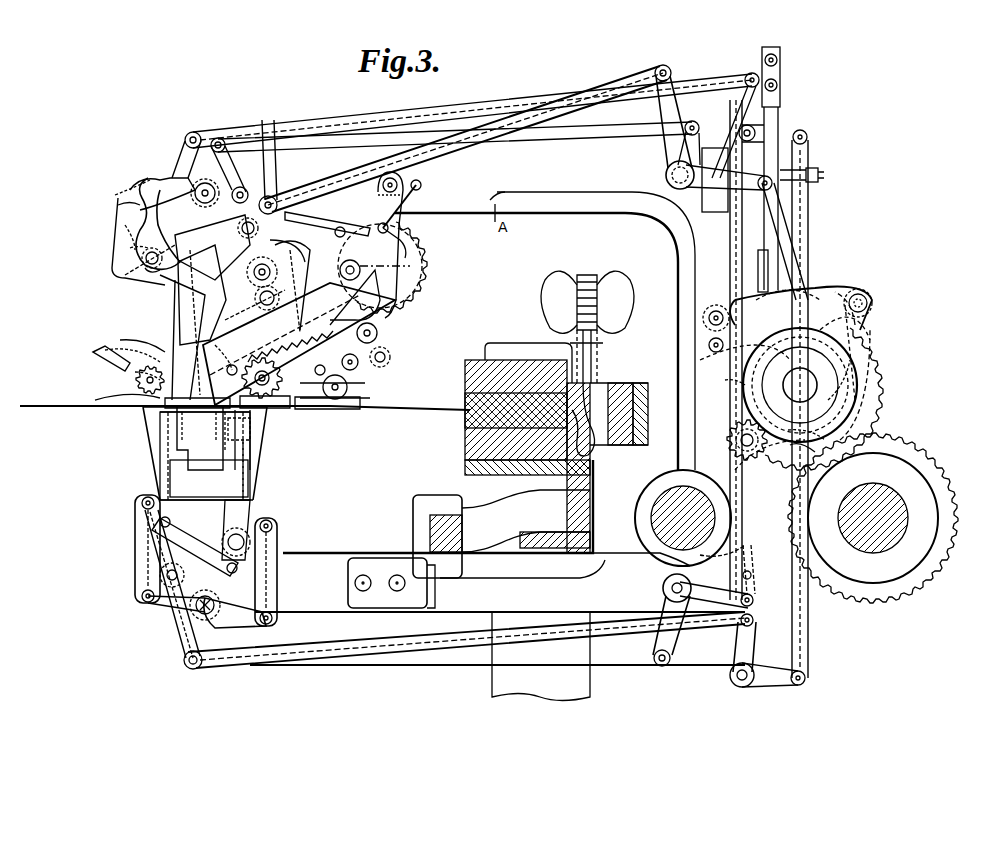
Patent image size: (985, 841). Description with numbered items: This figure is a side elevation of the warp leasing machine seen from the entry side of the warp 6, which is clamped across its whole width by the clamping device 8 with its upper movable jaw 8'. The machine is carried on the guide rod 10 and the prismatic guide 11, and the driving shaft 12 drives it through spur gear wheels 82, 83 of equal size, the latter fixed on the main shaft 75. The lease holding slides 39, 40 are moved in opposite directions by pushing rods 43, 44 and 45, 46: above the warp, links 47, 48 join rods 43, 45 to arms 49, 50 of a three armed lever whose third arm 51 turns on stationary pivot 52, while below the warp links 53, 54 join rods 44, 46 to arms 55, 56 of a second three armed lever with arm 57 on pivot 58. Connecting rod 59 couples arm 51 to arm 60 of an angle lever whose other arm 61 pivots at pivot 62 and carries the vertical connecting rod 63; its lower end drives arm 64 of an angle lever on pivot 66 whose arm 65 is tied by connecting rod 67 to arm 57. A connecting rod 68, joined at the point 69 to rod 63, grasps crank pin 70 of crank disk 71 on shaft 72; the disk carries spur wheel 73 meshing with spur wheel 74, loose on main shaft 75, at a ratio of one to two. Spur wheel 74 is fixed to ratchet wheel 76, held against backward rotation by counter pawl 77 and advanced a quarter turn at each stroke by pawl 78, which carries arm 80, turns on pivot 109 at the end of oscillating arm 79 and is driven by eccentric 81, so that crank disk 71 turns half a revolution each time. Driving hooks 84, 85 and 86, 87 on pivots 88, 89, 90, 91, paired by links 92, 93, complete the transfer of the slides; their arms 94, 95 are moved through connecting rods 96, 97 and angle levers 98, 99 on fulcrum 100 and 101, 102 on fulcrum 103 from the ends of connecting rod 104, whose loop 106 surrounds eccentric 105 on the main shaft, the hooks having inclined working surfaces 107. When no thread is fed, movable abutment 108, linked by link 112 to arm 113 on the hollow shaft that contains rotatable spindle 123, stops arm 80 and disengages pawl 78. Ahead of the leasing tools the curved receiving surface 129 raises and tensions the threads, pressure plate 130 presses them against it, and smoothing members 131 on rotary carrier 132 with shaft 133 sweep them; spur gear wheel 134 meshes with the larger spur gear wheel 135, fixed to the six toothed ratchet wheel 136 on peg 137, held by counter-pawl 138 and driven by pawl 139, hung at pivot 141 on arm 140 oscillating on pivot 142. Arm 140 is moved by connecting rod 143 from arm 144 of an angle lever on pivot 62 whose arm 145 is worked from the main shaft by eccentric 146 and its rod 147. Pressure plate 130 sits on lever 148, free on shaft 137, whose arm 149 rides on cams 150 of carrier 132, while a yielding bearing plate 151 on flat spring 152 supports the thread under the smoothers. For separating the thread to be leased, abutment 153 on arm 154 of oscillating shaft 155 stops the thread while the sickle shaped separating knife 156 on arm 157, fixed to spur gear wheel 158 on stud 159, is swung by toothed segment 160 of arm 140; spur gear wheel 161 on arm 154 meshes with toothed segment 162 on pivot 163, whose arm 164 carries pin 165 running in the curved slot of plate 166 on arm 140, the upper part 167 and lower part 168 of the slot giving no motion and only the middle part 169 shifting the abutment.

The warp 6 is at (30, 402).
The clamping device 8 is at (542, 456).
The upper movable jaw 8' is at (536, 351).
The guide rod 10 is at (650, 500).
The prismatic guide 11 is at (440, 533).
The driving shaft 12 is at (862, 565).
The slide 39 is at (138, 388).
The slide 40 is at (240, 422).
The pushing rod 43 is at (170, 318).
The pushing rod 44 is at (168, 458).
The pushing rod 45 is at (258, 400).
The pushing rod 46 is at (240, 456).
The link 47 is at (140, 183).
The link 48 is at (300, 214).
The arm of three armed lever 49 is at (158, 172).
The arm of three armed lever 50 is at (242, 188).
The arm of three armed lever 51 is at (197, 130).
The stationary pivot 52 is at (222, 136).
The link 53 is at (136, 583).
The link 54 is at (278, 598).
The arm of three armed lever 55 is at (150, 605).
The arm of three armed lever 56 is at (225, 620).
The arm of three armed lever 57 is at (184, 660).
The stationary pivot 58 is at (212, 600).
The connecting rod 59 is at (302, 128).
The arm of angle lever 60 is at (700, 150).
The arm of angle lever 61 is at (722, 195).
The stationary pivot 62 is at (666, 175).
The vertical connecting rod 63 is at (742, 240).
The arm of angle lever 64 is at (754, 602).
The arm of angle lever 65 is at (672, 648).
The stationary pivot 66 is at (663, 586).
The connecting rod 67 is at (426, 662).
The connecting rod 68 is at (748, 548).
The connection point 69 is at (752, 588).
The crank pin 70 is at (742, 470).
The crank disk 71 is at (740, 448).
The shaft 72 is at (727, 440).
The spur wheel 73 is at (732, 380).
The spur wheel 74 is at (745, 392).
The main shaft 75 is at (820, 385).
The ratchet wheel 76 is at (832, 392).
The counter pawl 77 is at (708, 347).
The actuating pawl 78 is at (870, 322).
The oscillating arm 79 is at (868, 300).
The arm of pawl 80 is at (855, 288).
The eccentric 81 is at (850, 445).
The spur gear wheel 82 is at (895, 462).
The spur gear wheel 83 is at (880, 352).
The driving hook 84 is at (150, 342).
The driving hook 85 is at (145, 437).
The driving hook 86 is at (270, 328).
The driving hook 87 is at (262, 445).
The stationary pivot 88 is at (142, 260).
The stationary pivot 89 is at (285, 253).
The stationary pivot 90 is at (166, 574).
The stationary pivot 91 is at (250, 537).
The link 92 is at (215, 300).
The link 93 is at (195, 542).
The arm of driving hook 94 is at (185, 160).
The arm of driving hook 95 is at (178, 640).
The connecting rod 96 is at (335, 132).
The connecting rod 97 is at (392, 660).
The arm of angle lever 98 is at (782, 106).
The arm of angle lever 99 is at (790, 135).
The fulcrum 100 is at (752, 132).
The arm of angle lever 101 is at (750, 632).
The arm of angle lever 102 is at (778, 685).
The fulcrum 103 is at (742, 688).
The connecting rod 104 is at (806, 158).
The eccentric 105 is at (868, 342).
The loop 106 is at (860, 396).
The inclined working surfaces 107 is at (150, 424).
The movable abutment 108 is at (768, 270).
The pivot 109 is at (872, 305).
The link 112 is at (780, 78).
The arm 113 is at (785, 88).
The rotatable spindle 123 is at (818, 176).
The curved receiving surface 129 is at (200, 470).
The pressure plate 130 is at (205, 432).
The smoothing members 131 is at (395, 322).
The rotary carrier 132 is at (364, 386).
The shaft 133 is at (358, 369).
The spur gear wheel 134 is at (378, 342).
The spur gear wheel 135 is at (410, 283).
The ratchet wheel 136 is at (412, 266).
The peg 137 is at (400, 252).
The counter-pawl 138 is at (406, 236).
The pawl 139 is at (345, 222).
The arm 140 is at (267, 125).
The pivot 141 is at (240, 226).
The pivot 142 is at (270, 272).
The connecting rod 143 is at (525, 108).
The arm of angle lever 144 is at (676, 90).
The arm of angle lever 145 is at (712, 176).
The eccentric 146 is at (828, 292).
The eccentric rod 147 is at (790, 245).
The lever 148 is at (338, 300).
The arm 149 is at (390, 275).
The cams 150 is at (375, 360).
The bearing plate 151 is at (356, 408).
The flat spring 152 is at (238, 472).
The abutment 153 is at (226, 366).
The arm 154 is at (150, 355).
The oscillating shaft 155 is at (145, 378).
The separating knife 156 is at (220, 318).
The arm 157 is at (318, 404).
The spur gear wheel 158 is at (252, 377).
The stud 159 is at (268, 300).
The toothed segment 160 is at (300, 285).
The spur gear wheel 161 is at (95, 400).
The toothed segment 162 is at (93, 356).
The pivot 163 is at (145, 275).
The arm 164 is at (132, 246).
The pin 165 is at (118, 193).
The plate 166 is at (118, 224).
The upper part of curved slot 167 is at (118, 212).
The lower part of curved slot 168 is at (150, 266).
The middle part of curved slot 169 is at (128, 230).